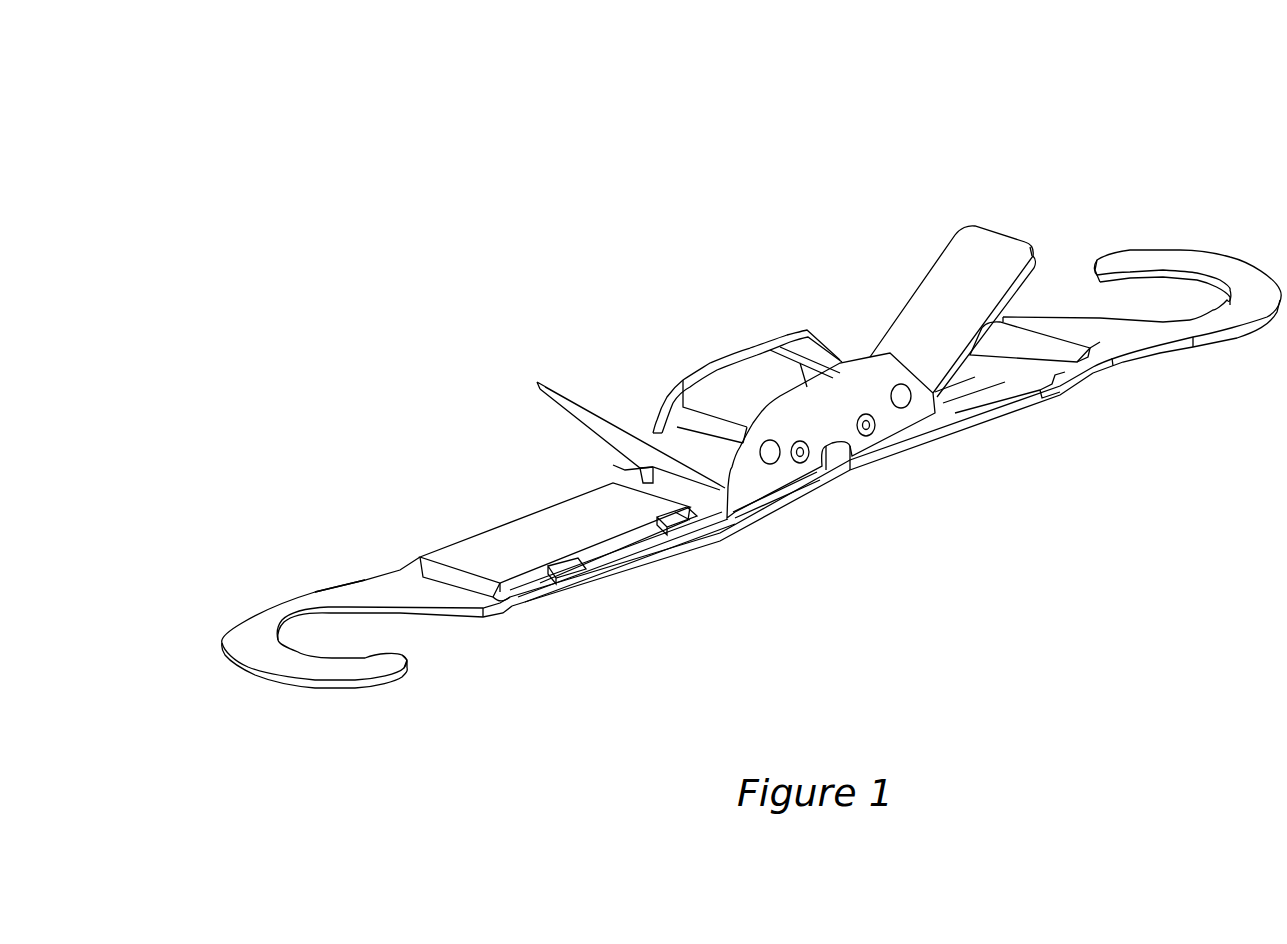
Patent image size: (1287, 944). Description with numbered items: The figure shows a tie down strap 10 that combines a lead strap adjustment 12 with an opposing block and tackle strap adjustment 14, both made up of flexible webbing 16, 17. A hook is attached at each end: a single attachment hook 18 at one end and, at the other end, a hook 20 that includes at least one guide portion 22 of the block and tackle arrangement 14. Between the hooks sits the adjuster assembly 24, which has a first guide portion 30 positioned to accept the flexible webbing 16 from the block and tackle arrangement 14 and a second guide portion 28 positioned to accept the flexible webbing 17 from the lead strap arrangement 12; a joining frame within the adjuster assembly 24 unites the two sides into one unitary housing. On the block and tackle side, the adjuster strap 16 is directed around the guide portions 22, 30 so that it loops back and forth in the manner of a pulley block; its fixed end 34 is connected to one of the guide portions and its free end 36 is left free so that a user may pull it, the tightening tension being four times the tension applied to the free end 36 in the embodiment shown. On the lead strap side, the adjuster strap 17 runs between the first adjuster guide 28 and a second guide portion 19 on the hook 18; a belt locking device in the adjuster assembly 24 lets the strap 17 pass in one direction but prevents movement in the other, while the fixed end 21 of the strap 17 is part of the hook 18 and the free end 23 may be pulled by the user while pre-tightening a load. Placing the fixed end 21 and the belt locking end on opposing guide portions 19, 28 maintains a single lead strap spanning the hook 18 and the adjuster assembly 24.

The tie down strap 10 is at (591, 133).
The lead strap adjustment 12 is at (956, 213).
The block and tackle strap adjustment 14 is at (490, 393).
The adjuster strap 16 is at (620, 548).
The adjuster strap 17 is at (953, 408).
The single attachment hook 18 is at (1172, 332).
The second guide portion 19 is at (1080, 352).
The hook 20 is at (308, 668).
The fixed end 21 is at (1030, 345).
The guide portion 22 is at (520, 595).
The free end 23 is at (930, 328).
The adjuster assembly 24 is at (700, 304).
The second guide portion 28 is at (827, 478).
The first guide portion 30 is at (708, 515).
The fixed end 34 is at (565, 573).
The free end 36 is at (607, 425).